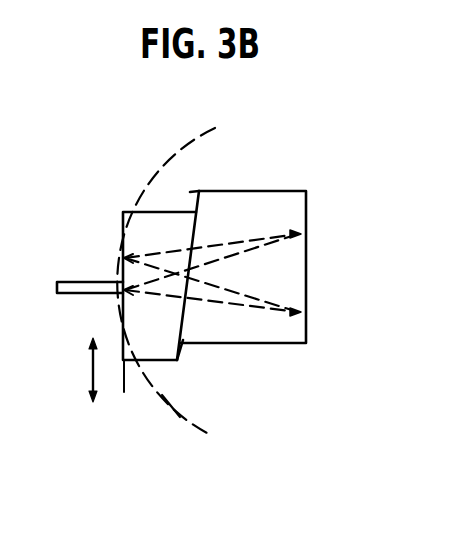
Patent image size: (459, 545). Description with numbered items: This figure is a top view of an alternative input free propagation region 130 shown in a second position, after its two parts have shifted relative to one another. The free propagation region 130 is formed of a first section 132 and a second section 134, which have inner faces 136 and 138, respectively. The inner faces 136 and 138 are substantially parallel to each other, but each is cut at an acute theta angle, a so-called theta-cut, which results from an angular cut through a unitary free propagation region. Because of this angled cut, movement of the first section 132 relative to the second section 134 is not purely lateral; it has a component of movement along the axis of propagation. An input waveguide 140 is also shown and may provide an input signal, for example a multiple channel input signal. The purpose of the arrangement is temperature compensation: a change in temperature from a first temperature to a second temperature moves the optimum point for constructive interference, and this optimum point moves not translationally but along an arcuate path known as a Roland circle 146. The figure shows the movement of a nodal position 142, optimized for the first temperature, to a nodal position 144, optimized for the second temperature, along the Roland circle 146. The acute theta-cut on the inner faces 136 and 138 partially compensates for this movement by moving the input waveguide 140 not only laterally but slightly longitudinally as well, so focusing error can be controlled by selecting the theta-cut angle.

The input free propagation region 130 is at (281, 177).
The first section 132 is at (124, 212).
The second section 134 is at (306, 316).
The inner face 136 is at (178, 351).
The inner face 138 is at (191, 193).
The input waveguide 140 is at (63, 294).
The nodal position 142 is at (124, 258).
The nodal position 144 is at (118, 378).
The Roland circle 146 is at (168, 413).